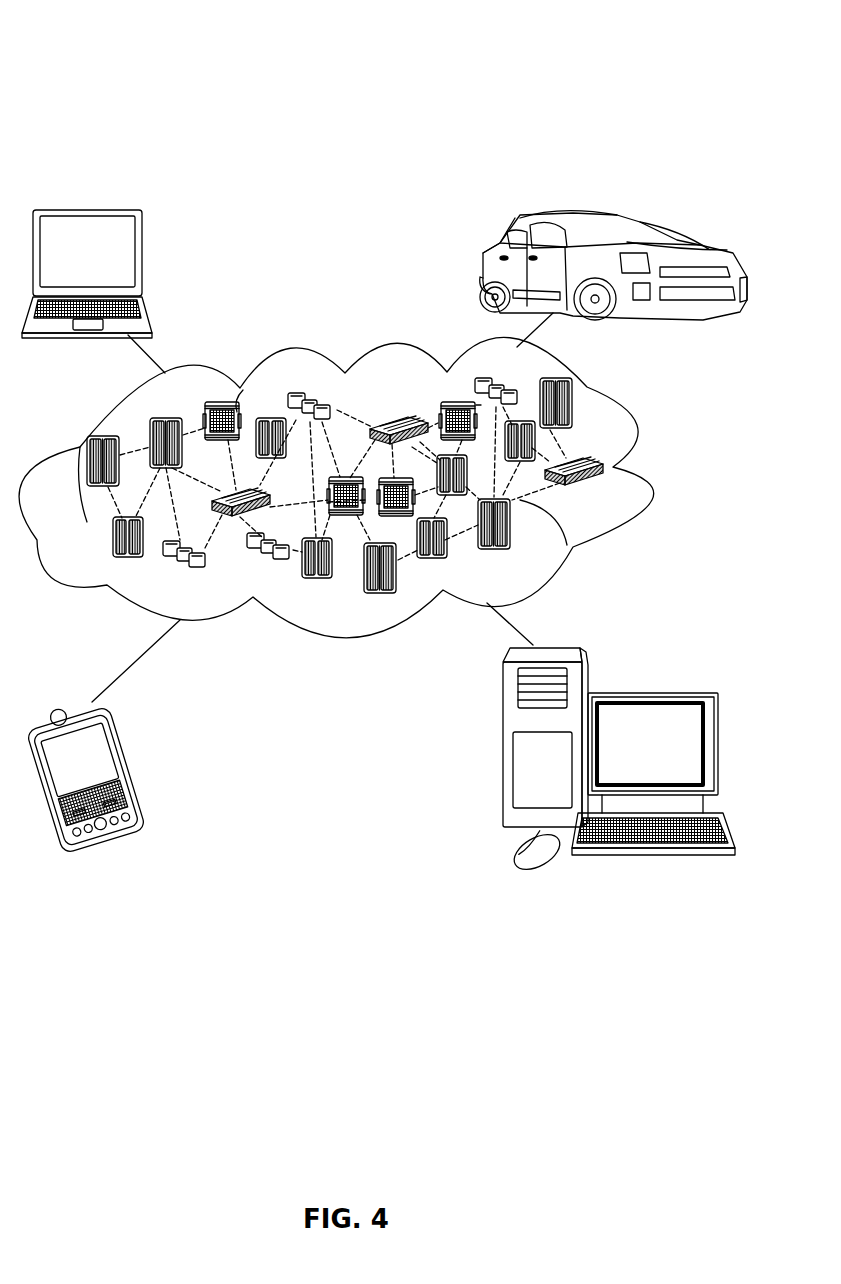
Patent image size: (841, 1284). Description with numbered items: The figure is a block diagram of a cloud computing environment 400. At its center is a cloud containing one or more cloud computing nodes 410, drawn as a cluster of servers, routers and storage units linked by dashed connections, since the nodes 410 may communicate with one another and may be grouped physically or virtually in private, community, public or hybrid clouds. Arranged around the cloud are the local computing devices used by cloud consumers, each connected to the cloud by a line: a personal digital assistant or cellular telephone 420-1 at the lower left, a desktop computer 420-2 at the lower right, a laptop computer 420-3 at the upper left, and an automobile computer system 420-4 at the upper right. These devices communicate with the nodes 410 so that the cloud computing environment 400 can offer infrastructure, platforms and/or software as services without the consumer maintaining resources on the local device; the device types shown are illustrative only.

The cloud computing environment 400 is at (197, 48).
The cloud computing nodes 410 is at (357, 487).
The personal digital assistant (PDA) or cellular telephone 420-1 is at (130, 768).
The desktop computer 420-2 is at (647, 693).
The laptop computer 420-3 is at (142, 258).
The automobile computer system 420-4 is at (482, 268).